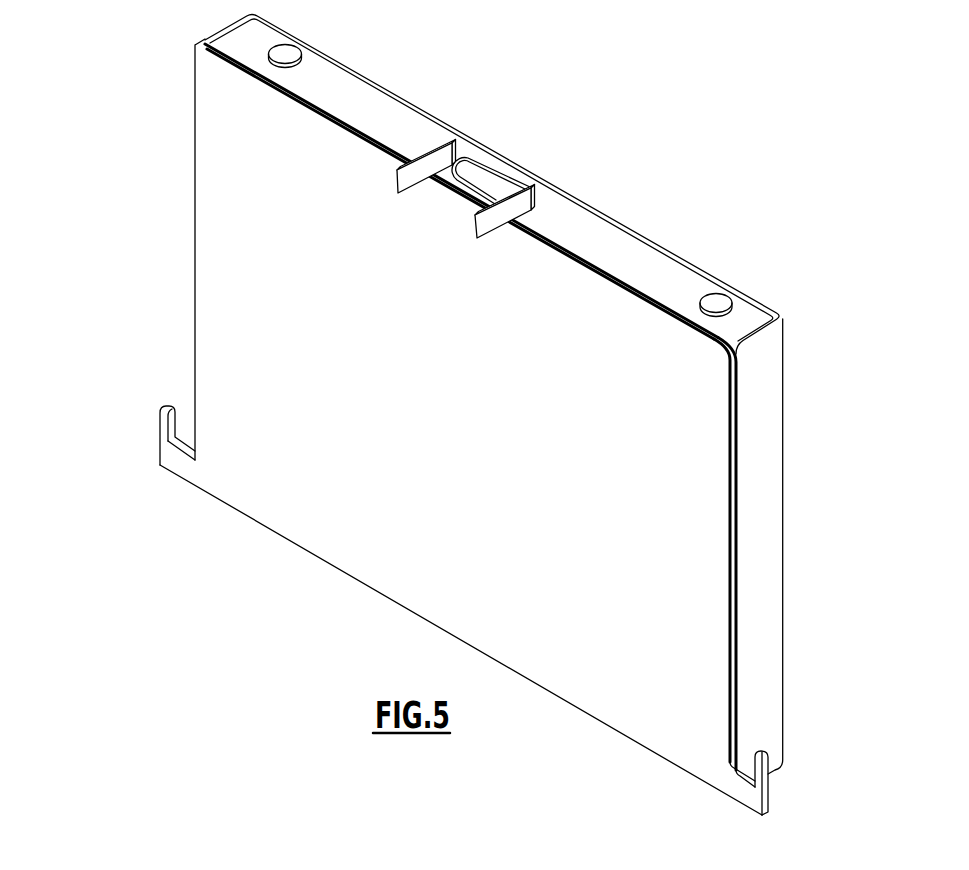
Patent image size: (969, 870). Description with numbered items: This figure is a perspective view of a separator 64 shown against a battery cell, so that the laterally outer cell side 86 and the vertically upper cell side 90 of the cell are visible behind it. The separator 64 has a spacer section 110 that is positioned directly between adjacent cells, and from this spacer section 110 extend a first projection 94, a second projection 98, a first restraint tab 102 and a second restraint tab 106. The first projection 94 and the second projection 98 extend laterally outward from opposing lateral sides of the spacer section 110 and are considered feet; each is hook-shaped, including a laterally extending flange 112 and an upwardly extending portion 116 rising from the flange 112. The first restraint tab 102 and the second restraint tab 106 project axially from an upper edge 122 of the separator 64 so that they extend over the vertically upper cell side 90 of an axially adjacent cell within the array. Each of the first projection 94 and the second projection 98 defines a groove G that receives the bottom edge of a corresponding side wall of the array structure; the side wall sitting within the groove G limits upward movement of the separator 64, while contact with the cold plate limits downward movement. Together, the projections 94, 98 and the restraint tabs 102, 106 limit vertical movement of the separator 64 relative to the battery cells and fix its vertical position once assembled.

The separator 64 is at (711, 656).
The laterally outer cell side 86 is at (767, 405).
The vertically upper cell side 90 is at (637, 243).
The first projection 94 is at (789, 778).
The second projection 98 is at (145, 414).
The first restraint tab 102 is at (532, 186).
The second restraint tab 106 is at (453, 141).
The spacer section 110 is at (711, 477).
The laterally extending flange 112 is at (737, 787).
The upwardly extending portion 116 is at (766, 751).
The upper edge 122 is at (561, 247).
The groove G is at (755, 728).